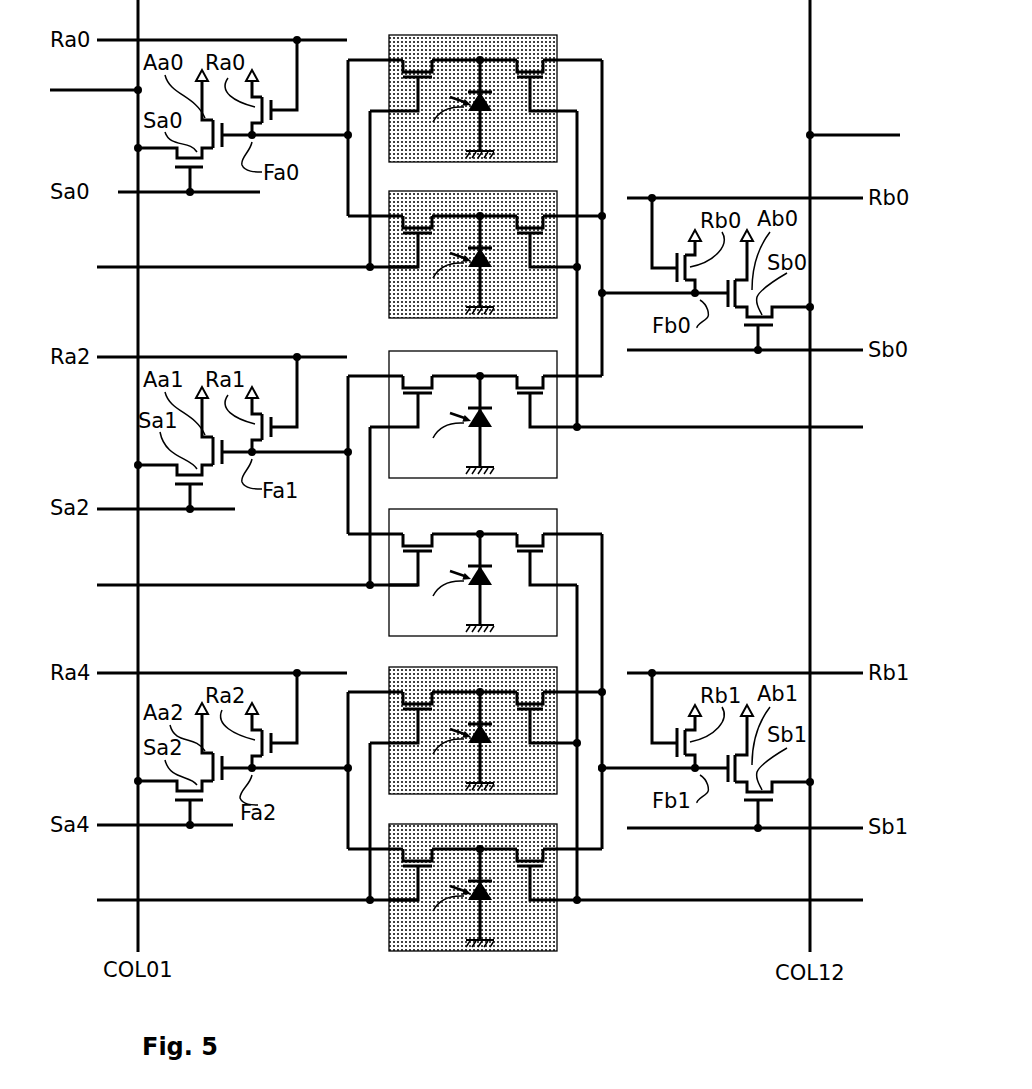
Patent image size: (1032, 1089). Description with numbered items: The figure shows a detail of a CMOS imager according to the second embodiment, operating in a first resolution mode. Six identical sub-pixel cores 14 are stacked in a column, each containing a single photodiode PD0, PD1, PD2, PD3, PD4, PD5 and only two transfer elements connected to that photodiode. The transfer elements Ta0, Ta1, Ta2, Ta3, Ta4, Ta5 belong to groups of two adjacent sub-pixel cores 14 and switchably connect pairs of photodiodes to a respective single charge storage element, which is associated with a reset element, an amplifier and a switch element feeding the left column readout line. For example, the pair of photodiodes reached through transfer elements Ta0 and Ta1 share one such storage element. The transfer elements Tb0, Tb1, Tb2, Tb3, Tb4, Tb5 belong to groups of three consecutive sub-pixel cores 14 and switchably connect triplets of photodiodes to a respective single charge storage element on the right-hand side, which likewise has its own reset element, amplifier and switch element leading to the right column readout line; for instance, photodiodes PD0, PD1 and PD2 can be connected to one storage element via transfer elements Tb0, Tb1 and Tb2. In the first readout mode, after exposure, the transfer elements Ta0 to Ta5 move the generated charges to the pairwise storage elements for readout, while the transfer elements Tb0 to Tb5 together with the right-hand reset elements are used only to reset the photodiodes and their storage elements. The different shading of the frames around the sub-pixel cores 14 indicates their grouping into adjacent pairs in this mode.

The sub-pixel core 14 is at (388, 98).
The photodiode PD0 is at (453, 107).
The photodiode PD1 is at (453, 263).
The photodiode PD2 is at (451, 423).
The photodiode PD3 is at (456, 581).
The photodiode PD4 is at (453, 739).
The photodiode PD5 is at (453, 896).
The transfer element Ta0 is at (437, 16).
The transfer element Tb0 is at (531, 58).
The transfer element Ta1 is at (418, 214).
The transfer element Tb1 is at (531, 214).
The transfer element Ta2 is at (418, 374).
The transfer element Tb2 is at (531, 374).
The transfer element Ta3 is at (418, 532).
The transfer element Tb3 is at (530, 532).
The transfer element Ta4 is at (418, 690).
The transfer element Tb4 is at (531, 690).
The transfer element Ta5 is at (435, 812).
The transfer element Tb5 is at (531, 847).